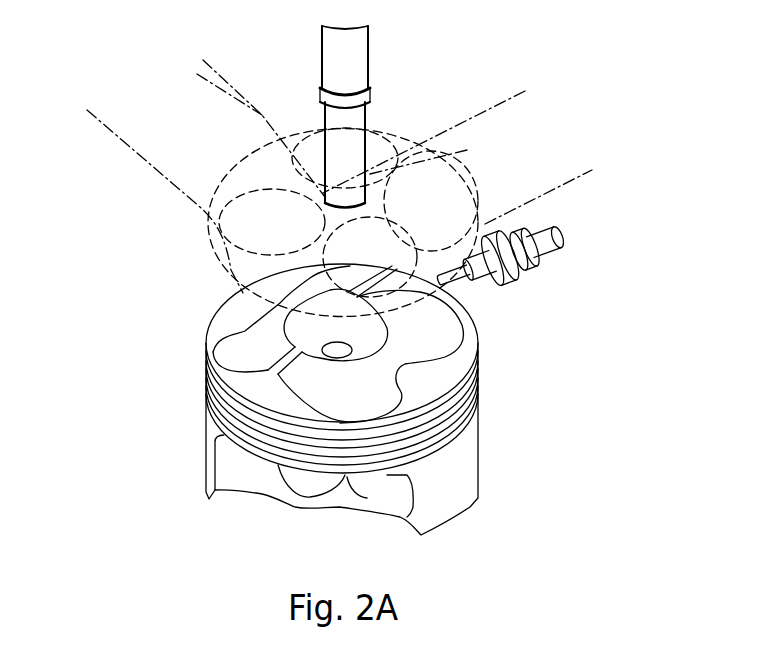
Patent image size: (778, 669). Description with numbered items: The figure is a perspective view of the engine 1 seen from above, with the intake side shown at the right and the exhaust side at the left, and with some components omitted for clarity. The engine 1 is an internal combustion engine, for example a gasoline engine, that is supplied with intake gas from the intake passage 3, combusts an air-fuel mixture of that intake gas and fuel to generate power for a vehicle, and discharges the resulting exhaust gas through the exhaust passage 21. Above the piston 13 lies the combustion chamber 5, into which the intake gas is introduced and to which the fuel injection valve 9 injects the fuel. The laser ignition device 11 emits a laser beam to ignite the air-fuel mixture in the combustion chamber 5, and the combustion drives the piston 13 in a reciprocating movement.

The engine 1 is at (170, 289).
The intake passage 3 is at (432, 128).
The combustion chamber 5 is at (243, 322).
The fuel injection valve 9 is at (493, 283).
The laser ignition device 11 is at (367, 81).
The piston 13 is at (445, 393).
The exhaust passage 21 is at (405, 150).